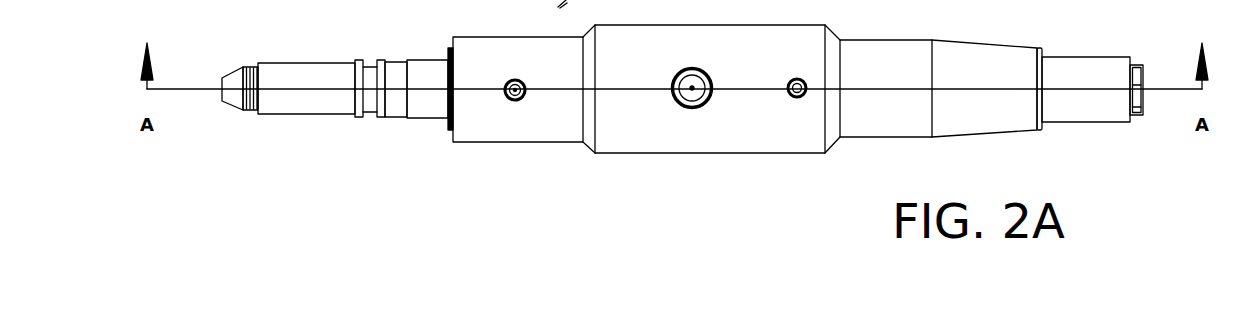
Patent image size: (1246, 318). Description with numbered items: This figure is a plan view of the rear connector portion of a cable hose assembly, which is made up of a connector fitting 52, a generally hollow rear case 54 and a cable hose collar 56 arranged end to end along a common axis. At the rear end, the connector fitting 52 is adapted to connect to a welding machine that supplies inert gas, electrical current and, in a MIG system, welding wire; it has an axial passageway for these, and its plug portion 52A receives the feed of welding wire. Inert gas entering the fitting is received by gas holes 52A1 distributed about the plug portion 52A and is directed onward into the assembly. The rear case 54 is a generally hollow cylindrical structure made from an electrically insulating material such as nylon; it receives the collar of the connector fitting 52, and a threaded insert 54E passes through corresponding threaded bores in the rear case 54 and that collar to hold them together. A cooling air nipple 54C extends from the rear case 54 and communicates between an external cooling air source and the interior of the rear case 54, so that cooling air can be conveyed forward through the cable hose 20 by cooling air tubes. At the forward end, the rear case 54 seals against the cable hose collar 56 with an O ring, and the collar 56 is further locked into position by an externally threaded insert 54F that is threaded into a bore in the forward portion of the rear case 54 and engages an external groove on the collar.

The cable hose 20 is at (1100, 86).
The connector fitting 52 is at (288, 50).
The plug portion 52A is at (317, 107).
The gas holes 52A1 is at (372, 84).
The rear case 54 is at (650, 67).
The cooling air nipple 54C is at (702, 70).
The threaded insert 54E is at (508, 80).
The threaded insert 54F is at (798, 100).
The cable hose collar 56 is at (912, 77).